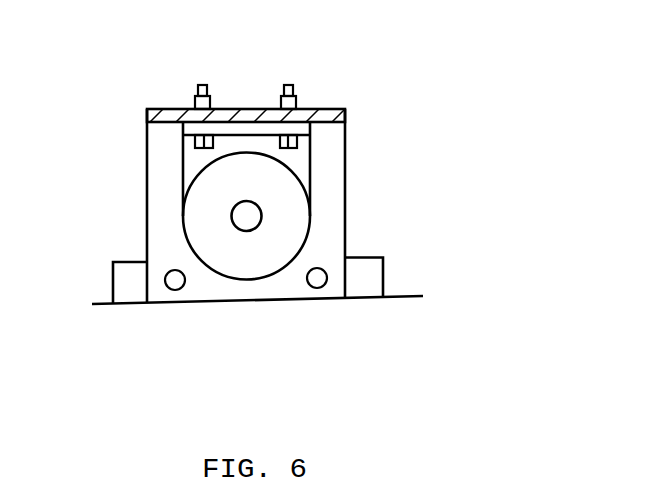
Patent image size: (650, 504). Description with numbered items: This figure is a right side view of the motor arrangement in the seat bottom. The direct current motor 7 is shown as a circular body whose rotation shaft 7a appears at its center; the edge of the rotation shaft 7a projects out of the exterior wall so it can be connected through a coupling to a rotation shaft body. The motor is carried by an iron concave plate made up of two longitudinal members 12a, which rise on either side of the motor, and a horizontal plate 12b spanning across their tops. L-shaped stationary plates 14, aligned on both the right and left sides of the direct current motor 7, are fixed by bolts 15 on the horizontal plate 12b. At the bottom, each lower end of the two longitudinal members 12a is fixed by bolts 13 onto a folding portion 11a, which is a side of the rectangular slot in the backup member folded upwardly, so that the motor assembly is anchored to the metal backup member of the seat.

The direct current motor 7 is at (203, 198).
The rotation shaft 7a is at (246, 222).
The folding portion 11a is at (360, 277).
The longitudinal member 12a is at (330, 167).
The horizontal plate 12b is at (319, 108).
The bolts 13 is at (175, 283).
The L-shaped stationary plate 14 is at (193, 163).
The bolts 15 is at (268, 138).